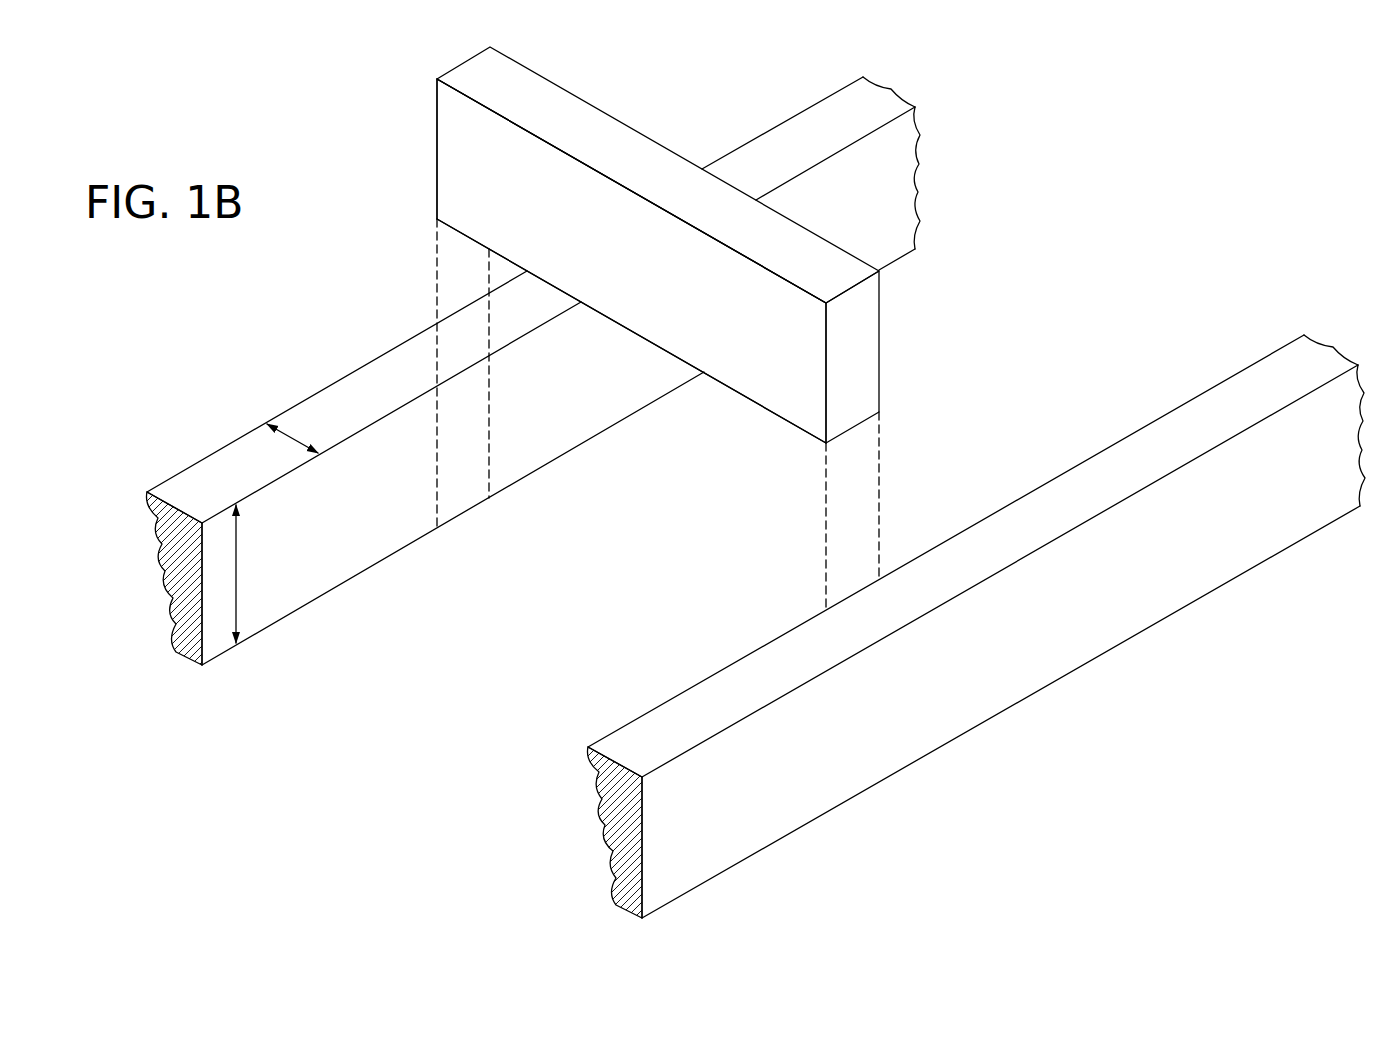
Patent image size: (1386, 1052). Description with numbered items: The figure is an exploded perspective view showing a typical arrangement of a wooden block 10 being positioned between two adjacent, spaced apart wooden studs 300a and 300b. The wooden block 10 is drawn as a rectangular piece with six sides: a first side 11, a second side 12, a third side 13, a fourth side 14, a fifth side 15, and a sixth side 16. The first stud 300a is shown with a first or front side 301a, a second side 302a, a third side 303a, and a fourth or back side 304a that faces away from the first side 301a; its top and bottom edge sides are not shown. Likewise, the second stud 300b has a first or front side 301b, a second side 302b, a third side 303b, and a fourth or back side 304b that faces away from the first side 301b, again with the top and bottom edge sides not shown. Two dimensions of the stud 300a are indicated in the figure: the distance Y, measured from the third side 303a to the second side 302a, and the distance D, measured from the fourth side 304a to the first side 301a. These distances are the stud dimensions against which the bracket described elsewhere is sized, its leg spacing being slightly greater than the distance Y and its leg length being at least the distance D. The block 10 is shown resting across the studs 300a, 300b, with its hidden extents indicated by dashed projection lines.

The wooden block 10 is at (662, 311).
The first side 11 is at (610, 127).
The second side 12 is at (782, 385).
The third side 13 is at (680, 155).
The fourth side 14 is at (436, 148).
The fifth side 15 is at (850, 382).
The sixth side 16 is at (712, 383).
The stud 300a is at (541, 339).
The first or front side 301a is at (232, 474).
The second side 302a is at (282, 594).
The third side 303a is at (306, 396).
The fourth or back side 304a is at (404, 549).
The stud 300b is at (970, 593).
The first or front side 301b is at (753, 680).
The second side 302b is at (640, 717).
The third side 303b is at (913, 733).
The fourth or back side 304b is at (1120, 643).